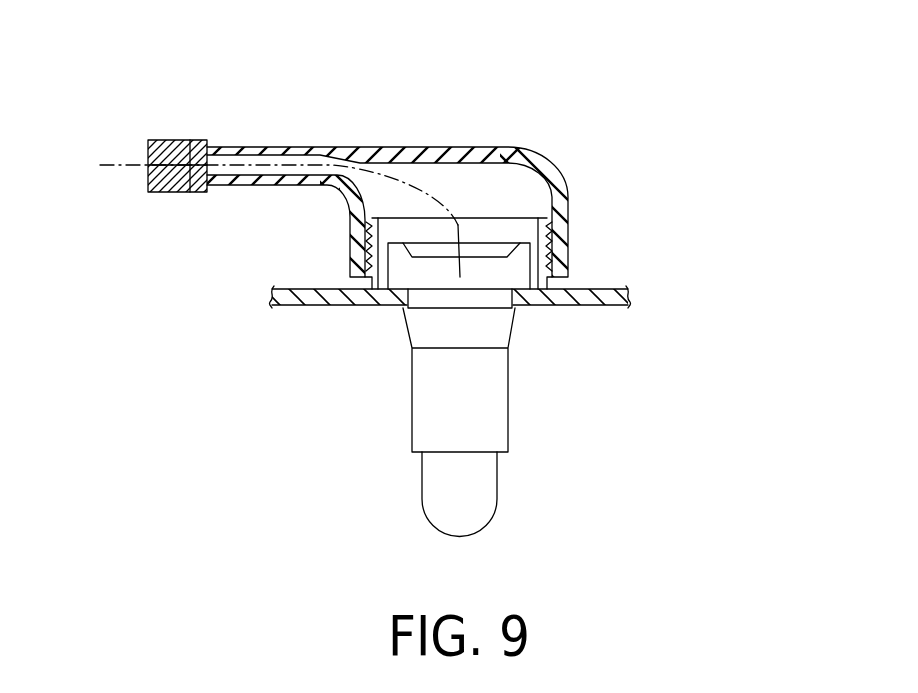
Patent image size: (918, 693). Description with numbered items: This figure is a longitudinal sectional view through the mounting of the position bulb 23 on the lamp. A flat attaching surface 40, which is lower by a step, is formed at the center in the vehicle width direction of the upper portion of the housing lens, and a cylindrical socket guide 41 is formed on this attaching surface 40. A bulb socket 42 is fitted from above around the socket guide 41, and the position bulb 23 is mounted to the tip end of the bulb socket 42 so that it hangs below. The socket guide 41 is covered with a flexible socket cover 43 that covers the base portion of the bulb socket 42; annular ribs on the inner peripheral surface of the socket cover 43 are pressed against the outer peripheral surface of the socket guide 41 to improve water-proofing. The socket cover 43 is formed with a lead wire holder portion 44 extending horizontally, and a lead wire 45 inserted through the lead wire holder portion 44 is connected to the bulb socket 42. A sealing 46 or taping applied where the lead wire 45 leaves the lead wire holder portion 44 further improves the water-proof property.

The position bulb 23 is at (420, 498).
The attaching surface 40 is at (593, 289).
The socket guide 41 is at (552, 222).
The bulb socket 42 is at (408, 395).
The socket cover 43 is at (453, 147).
The lead wire holder portion 44 is at (272, 147).
The lead wire 45 is at (375, 165).
The sealing 46 is at (175, 140).